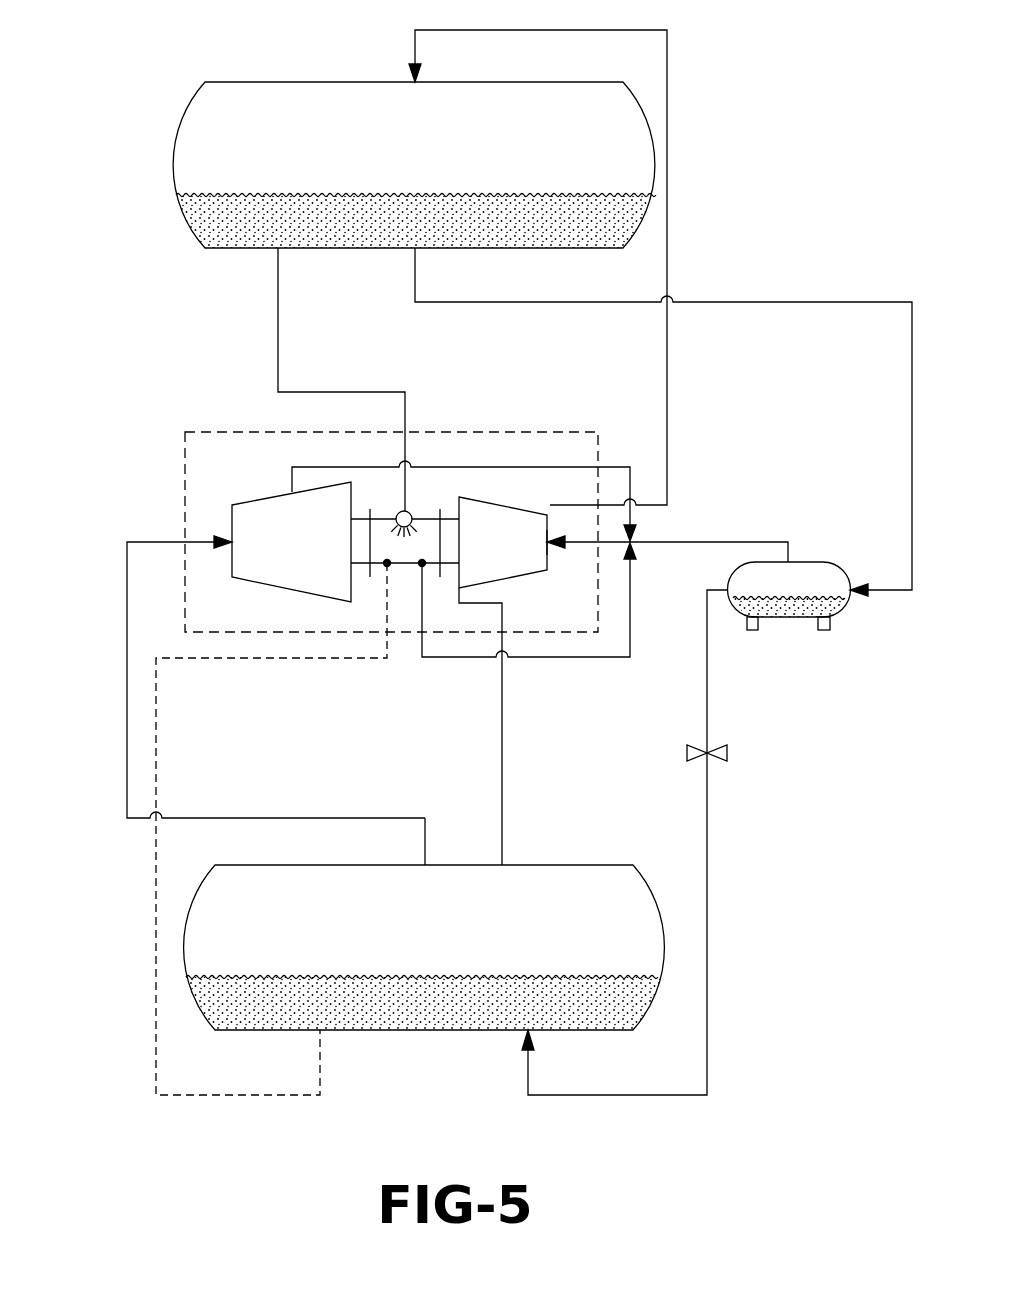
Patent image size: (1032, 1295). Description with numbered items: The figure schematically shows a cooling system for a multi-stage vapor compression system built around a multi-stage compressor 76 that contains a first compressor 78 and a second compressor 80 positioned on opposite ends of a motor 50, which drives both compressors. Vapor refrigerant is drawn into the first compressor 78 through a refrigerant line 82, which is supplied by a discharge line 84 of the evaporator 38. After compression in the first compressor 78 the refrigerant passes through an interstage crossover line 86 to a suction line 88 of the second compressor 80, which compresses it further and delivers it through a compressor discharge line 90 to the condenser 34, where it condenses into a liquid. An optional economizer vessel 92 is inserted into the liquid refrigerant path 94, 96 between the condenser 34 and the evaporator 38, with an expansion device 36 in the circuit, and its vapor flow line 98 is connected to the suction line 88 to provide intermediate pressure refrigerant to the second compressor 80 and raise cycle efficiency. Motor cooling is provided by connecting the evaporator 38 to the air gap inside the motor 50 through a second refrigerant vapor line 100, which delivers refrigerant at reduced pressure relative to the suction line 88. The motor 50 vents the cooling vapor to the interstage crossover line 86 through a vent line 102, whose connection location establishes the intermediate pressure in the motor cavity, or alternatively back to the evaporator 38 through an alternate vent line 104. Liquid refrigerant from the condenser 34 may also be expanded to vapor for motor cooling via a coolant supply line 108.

The condenser 34 is at (397, 165).
The evaporator 38 is at (407, 942).
The economizer vessel 92 is at (826, 562).
The multi-stage compressor 76 is at (185, 460).
The first compressor 78 is at (276, 560).
The second compressor 80 is at (486, 560).
The motor 50 is at (427, 530).
The refrigerant line 82 is at (127, 618).
The discharge line 84 is at (425, 865).
The interstage crossover line 86 is at (481, 467).
The suction line 88 is at (547, 542).
The compressor discharge line 90 is at (667, 355).
The liquid refrigerant path 94 is at (912, 440).
The liquid refrigerant path 96 is at (707, 690).
The vapor flow line 98 is at (714, 542).
The second refrigerant vapor line 100 is at (502, 733).
The vent line 102 is at (570, 657).
The alternate vent line 104 is at (210, 1097).
The coolant supply line 108 is at (278, 322).
The expansion device 36 is at (727, 750).